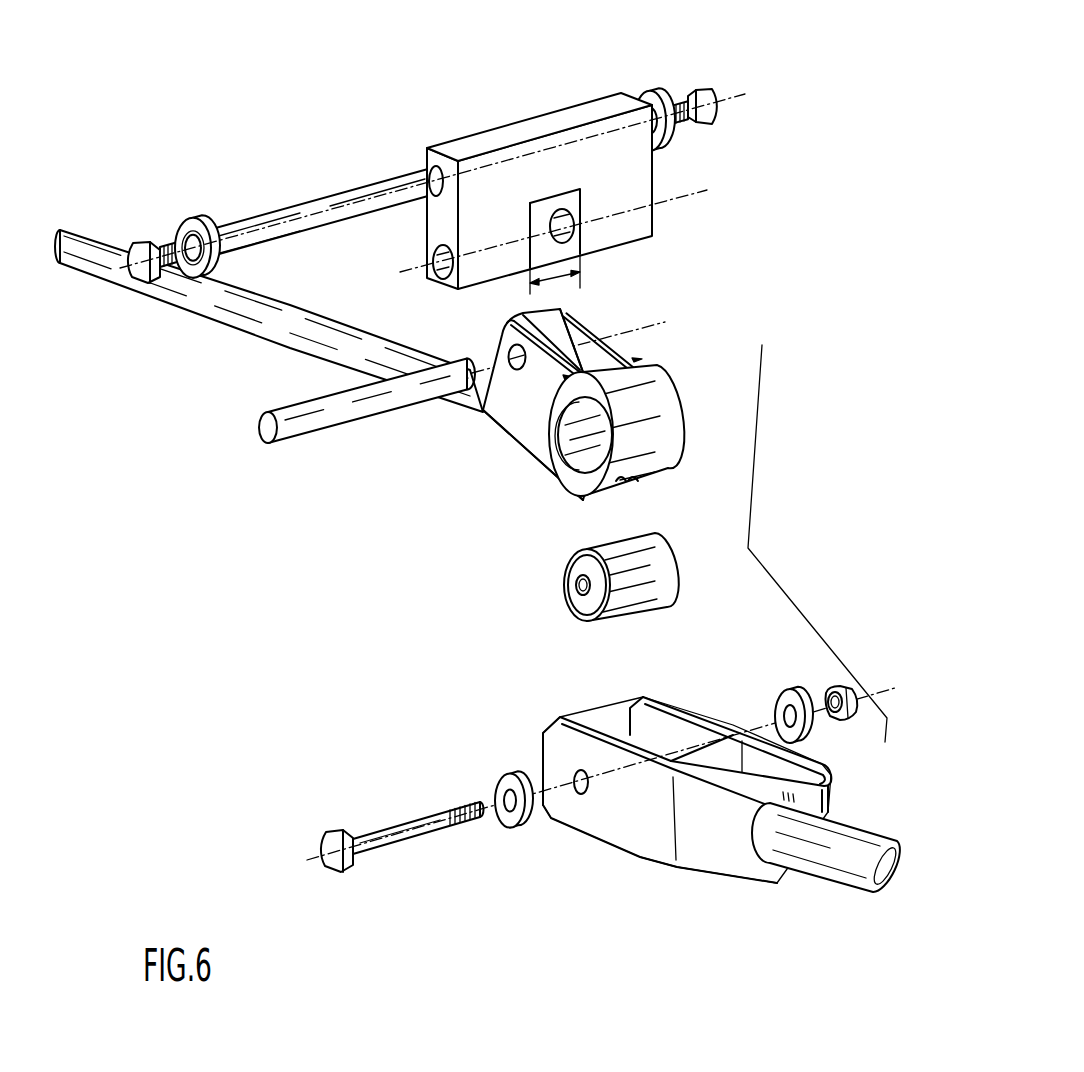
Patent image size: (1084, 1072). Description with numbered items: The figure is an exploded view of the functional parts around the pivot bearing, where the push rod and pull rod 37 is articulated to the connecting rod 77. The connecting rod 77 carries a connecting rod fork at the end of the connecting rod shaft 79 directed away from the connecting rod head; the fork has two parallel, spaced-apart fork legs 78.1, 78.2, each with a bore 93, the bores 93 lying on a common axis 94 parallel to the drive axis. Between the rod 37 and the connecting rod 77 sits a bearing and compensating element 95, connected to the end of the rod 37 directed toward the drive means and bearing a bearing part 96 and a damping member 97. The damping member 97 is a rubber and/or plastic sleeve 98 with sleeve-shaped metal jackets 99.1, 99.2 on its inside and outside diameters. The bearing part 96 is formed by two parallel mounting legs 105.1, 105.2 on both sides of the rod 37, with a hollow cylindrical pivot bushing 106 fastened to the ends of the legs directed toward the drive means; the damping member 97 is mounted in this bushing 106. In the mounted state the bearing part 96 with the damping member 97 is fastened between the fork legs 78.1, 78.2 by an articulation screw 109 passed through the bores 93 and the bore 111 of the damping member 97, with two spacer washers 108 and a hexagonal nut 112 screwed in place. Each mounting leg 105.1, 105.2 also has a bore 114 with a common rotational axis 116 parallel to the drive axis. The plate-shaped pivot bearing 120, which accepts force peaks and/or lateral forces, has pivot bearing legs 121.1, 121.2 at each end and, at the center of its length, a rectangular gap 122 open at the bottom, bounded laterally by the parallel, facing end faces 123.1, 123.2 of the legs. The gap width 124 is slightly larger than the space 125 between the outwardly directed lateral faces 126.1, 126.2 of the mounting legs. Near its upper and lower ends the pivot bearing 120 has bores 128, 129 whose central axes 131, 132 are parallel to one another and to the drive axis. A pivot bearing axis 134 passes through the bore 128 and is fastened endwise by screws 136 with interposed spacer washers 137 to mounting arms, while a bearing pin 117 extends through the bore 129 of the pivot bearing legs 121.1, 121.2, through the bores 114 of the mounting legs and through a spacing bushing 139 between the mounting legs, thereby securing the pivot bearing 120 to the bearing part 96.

The push rod and pull rod 37 is at (178, 302).
The connecting rod 77 is at (693, 797).
The fork leg 78.1 is at (553, 736).
The fork leg 78.2 is at (673, 707).
The connecting rod shaft 79 is at (827, 873).
The bore 93 is at (583, 796).
The common axis 94 is at (321, 862).
The bearing and compensating element 95 is at (754, 548).
The bearing part 96 is at (606, 394).
The damping member 97 is at (611, 586).
The sleeve 98 is at (573, 572).
The sleeve-shaped metal jacket 99.1 is at (662, 558).
The sleeve-shaped metal jacket 99.2 is at (583, 603).
The mounting leg 105.1 is at (503, 418).
The mounting leg 105.2 is at (588, 313).
The pivot bushing 106 is at (673, 432).
The spacer washer 108 is at (497, 787).
The articulation screw 109 is at (595, 796).
The bore 111 is at (583, 584).
The hexagonal nut 112 is at (850, 716).
The bore 114 is at (510, 350).
The common rotational axis 116 is at (253, 433).
The bearing pin 117 is at (341, 424).
The pivot bearing 120 is at (452, 163).
The pivot bearing leg 121.1 is at (468, 278).
The pivot bearing leg 121.2 is at (643, 212).
The gap 122 is at (556, 257).
The end face 123.1 is at (545, 190).
The end face 123.2 is at (537, 208).
The gap width 124 is at (576, 277).
The space 125 is at (653, 345).
The lateral face 126.1 is at (533, 443).
The lateral face 126.2 is at (660, 327).
The bore 128 is at (427, 152).
The bore 129 is at (440, 253).
The central axis 131 is at (748, 90).
The central axis 132 is at (706, 186).
The pivot bearing axis 134 is at (323, 199).
The screw 136 is at (132, 244).
The spacer washer 137 is at (191, 219).
The spacing bushing 139 is at (530, 313).